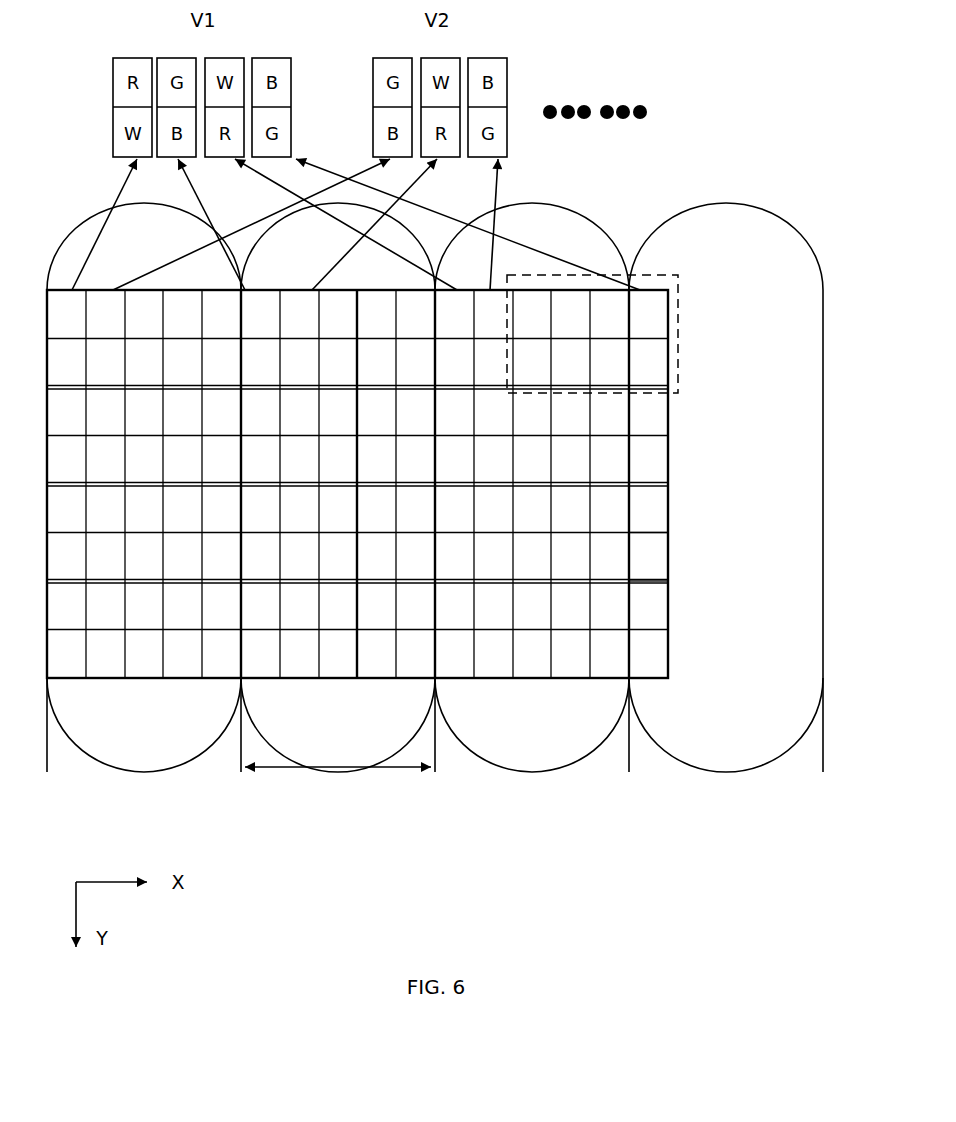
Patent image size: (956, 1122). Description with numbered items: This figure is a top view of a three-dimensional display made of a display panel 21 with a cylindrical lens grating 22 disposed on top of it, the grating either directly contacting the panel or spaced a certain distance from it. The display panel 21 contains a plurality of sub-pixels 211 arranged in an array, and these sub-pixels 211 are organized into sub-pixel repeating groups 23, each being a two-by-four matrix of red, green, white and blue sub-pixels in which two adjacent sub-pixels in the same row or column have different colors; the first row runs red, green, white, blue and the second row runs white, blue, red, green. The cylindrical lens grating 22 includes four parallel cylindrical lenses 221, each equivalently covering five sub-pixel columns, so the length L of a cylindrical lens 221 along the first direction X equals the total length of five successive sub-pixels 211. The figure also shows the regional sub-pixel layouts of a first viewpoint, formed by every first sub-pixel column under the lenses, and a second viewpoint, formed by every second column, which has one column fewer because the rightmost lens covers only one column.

The display panel 21 is at (671, 502).
The sub-pixel 211 is at (652, 543).
The cylindrical lens grating 22 is at (435, 547).
The cylindrical lens 221 is at (532, 497).
The sub-pixel repeating group 23 is at (683, 338).